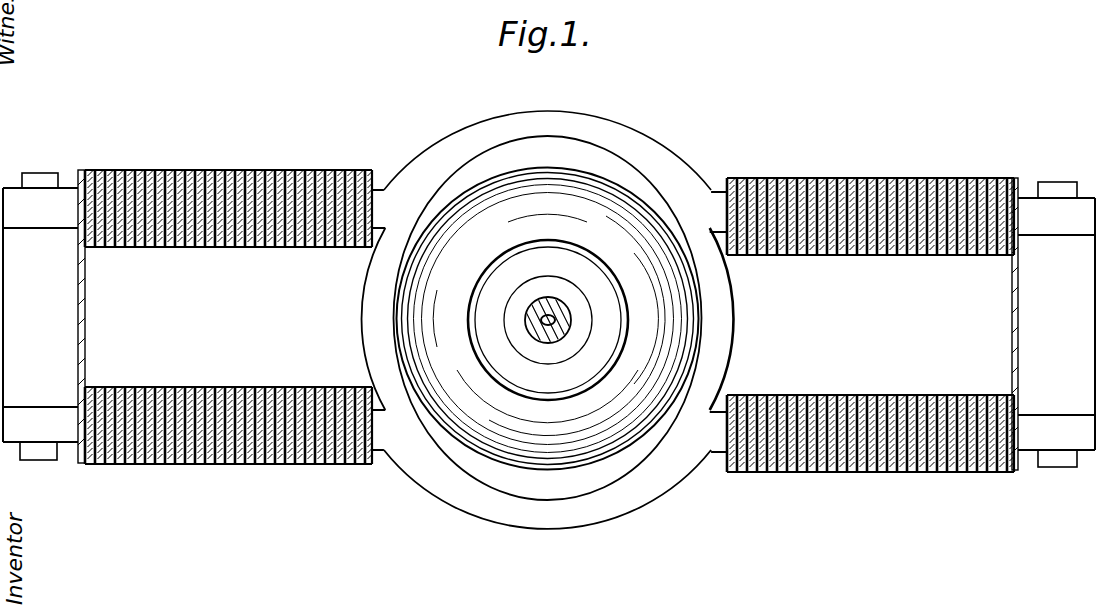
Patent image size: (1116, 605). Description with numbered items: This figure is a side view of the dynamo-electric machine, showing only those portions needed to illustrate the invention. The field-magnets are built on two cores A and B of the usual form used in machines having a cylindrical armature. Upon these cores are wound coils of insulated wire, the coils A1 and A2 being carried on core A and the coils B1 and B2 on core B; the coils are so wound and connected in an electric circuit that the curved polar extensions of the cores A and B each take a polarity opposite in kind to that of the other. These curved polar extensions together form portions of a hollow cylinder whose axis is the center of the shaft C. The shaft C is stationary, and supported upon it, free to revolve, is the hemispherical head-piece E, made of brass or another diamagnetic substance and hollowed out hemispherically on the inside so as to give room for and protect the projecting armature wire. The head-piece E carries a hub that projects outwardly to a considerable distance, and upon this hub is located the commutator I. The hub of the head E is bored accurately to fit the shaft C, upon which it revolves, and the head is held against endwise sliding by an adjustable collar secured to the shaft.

The field-magnet core A is at (549, 132).
The field-magnet core B is at (549, 519).
The shaft C is at (566, 303).
The hemispherical head-piece E is at (548, 318).
The commutator I is at (548, 320).
The coil of insulated wire A1 is at (229, 190).
The coil of insulated wire A2 is at (871, 196).
The coil of insulated wire B1 is at (229, 455).
The coil of insulated wire B2 is at (871, 460).